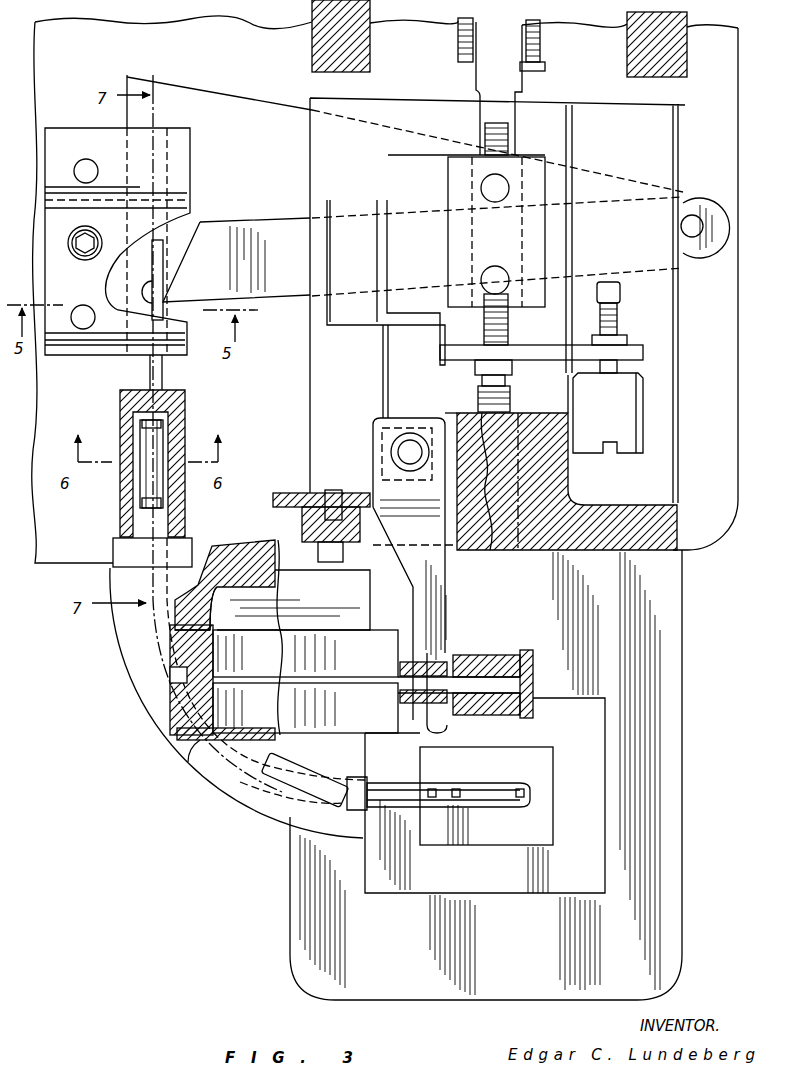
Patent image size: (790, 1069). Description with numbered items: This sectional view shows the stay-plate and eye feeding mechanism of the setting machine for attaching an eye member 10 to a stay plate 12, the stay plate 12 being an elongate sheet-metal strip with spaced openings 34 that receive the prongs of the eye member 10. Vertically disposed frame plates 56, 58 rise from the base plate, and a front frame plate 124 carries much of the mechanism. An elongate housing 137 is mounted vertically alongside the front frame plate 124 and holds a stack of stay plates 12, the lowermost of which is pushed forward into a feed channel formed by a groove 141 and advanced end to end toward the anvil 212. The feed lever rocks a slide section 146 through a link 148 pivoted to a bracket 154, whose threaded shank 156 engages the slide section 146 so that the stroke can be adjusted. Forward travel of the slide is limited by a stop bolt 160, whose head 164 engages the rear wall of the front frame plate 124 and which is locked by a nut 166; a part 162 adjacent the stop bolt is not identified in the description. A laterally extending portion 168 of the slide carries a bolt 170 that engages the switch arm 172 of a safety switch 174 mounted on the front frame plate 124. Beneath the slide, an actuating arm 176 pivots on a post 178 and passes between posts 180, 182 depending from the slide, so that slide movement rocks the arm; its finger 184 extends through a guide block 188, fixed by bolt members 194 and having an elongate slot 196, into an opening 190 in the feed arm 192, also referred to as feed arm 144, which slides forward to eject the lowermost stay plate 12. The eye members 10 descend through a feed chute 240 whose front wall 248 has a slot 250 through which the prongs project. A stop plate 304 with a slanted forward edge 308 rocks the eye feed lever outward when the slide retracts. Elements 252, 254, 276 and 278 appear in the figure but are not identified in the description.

The eye member 10 is at (167, 677).
The stay plate 12 is at (153, 471).
The openings 34 is at (162, 428).
The frame plate 56 is at (312, 52).
The frame plate 58 is at (687, 56).
The front frame plate 124 is at (566, 470).
The housing 137 is at (192, 406).
The groove 141 is at (133, 568).
The feed arm 144 is at (148, 368).
The slide section 146 is at (530, 158).
The link 148 is at (541, 40).
The bracket 154 is at (528, 73).
The threaded shank 156 is at (487, 126).
The stop bolt 160 is at (482, 381).
The threaded shaft 162 is at (482, 334).
The head 164 is at (512, 397).
The nut 166 is at (476, 366).
The laterally extending portion 168 is at (643, 350).
The bolt 170 is at (617, 311).
The switch arm 172 is at (618, 370).
The switch 174 is at (632, 410).
The actuating arm 176 is at (263, 226).
The post 178 is at (701, 199).
The post 180 is at (510, 187).
The post 182 is at (508, 278).
The finger 184 is at (168, 285).
The guide block 188 is at (192, 150).
The opening 190 is at (103, 290).
The feed arm 192 is at (160, 252).
The bolt members 194 is at (86, 230).
The elongate slot 196 is at (165, 134).
The anvil 212 is at (480, 838).
The feed chute 240 is at (188, 762).
The front wall 248 is at (170, 653).
The slot 250 is at (168, 678).
The shaft 252 is at (415, 660).
The washer 254 is at (425, 705).
The sleeve 276 is at (493, 653).
The flange 278 is at (503, 707).
The stop plate 304 is at (408, 312).
The forward edge 308 is at (383, 355).